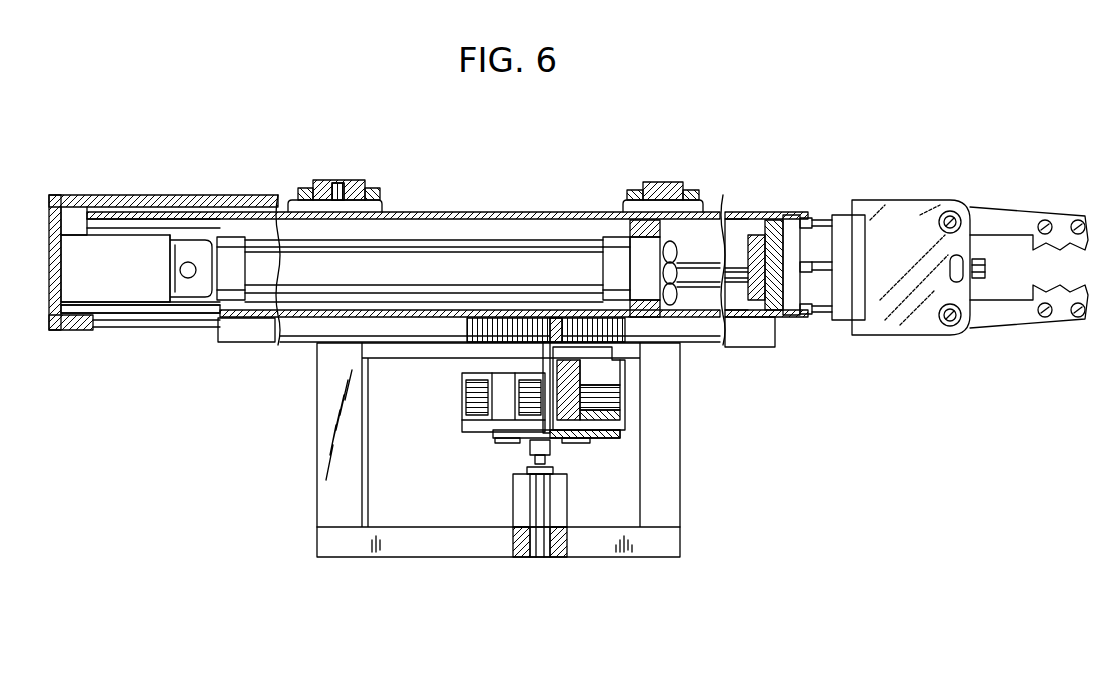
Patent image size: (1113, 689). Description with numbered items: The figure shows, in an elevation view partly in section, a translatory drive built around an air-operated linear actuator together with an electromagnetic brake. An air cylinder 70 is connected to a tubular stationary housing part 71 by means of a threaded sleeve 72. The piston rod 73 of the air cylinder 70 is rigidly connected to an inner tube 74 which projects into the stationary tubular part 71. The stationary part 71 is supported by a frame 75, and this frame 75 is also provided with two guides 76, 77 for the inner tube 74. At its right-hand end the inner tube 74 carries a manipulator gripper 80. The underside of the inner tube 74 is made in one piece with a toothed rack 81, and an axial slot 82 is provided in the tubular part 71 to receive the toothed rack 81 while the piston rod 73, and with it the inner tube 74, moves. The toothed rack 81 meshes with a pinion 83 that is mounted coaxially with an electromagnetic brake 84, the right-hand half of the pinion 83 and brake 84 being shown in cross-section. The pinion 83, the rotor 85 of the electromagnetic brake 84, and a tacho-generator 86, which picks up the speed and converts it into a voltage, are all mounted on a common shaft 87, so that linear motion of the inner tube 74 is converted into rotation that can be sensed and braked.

The air cylinder 70 is at (425, 243).
The tubular stationary housing part 71 is at (238, 195).
The threaded sleeve 72 is at (185, 235).
The piston rod 73 is at (712, 263).
The inner tube 74 is at (510, 213).
The frame 75 is at (318, 420).
The guide 76 is at (333, 185).
The guide 77 is at (657, 183).
The manipulator gripper 80 is at (860, 200).
The toothed rack 81 is at (262, 332).
The axial slot 82 is at (185, 320).
The pinion 83 is at (617, 380).
The electromagnetic brake 84 is at (598, 438).
The rotor 85 is at (610, 434).
The tacho-generator 86 is at (552, 530).
The common shaft 87 is at (545, 400).